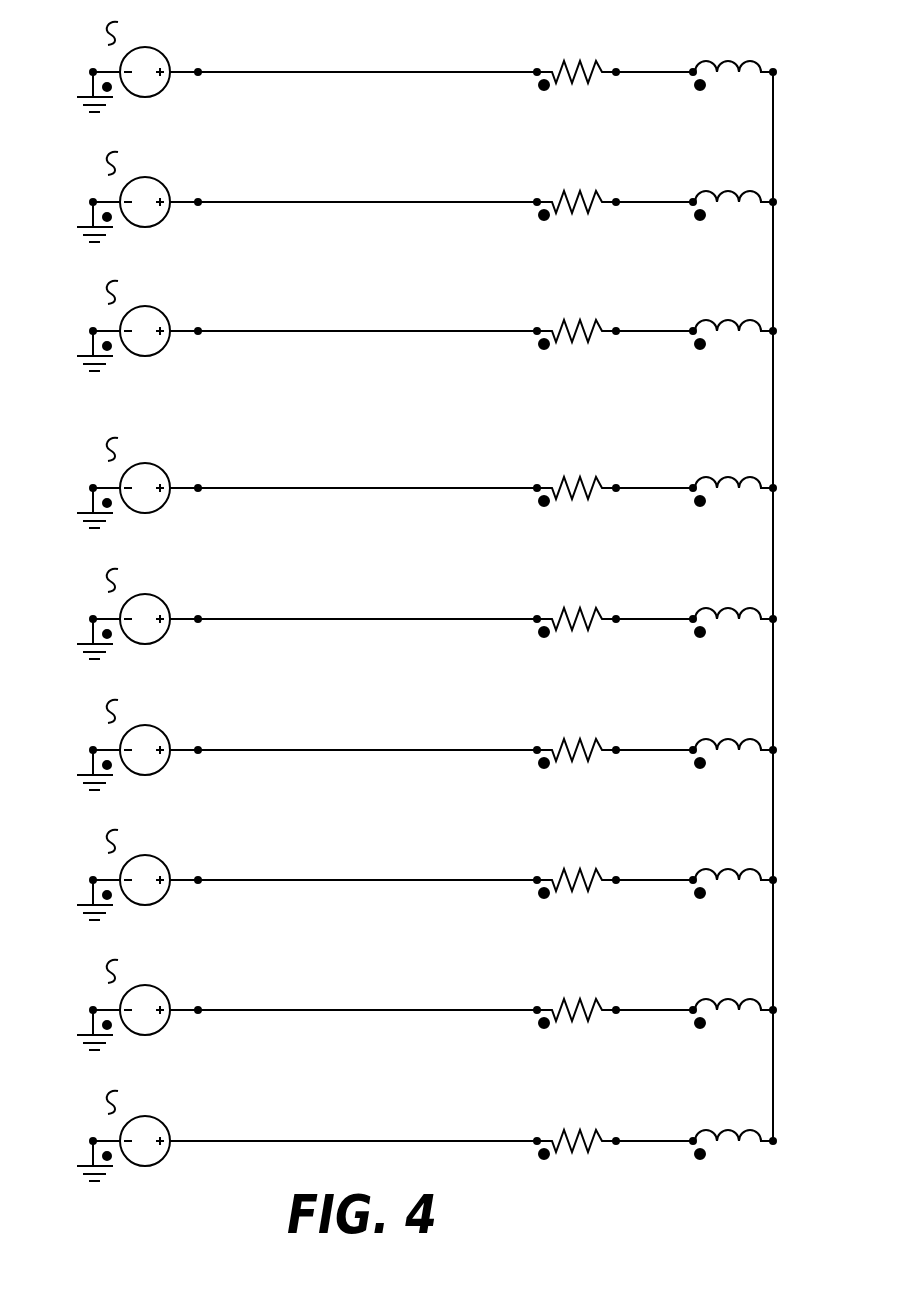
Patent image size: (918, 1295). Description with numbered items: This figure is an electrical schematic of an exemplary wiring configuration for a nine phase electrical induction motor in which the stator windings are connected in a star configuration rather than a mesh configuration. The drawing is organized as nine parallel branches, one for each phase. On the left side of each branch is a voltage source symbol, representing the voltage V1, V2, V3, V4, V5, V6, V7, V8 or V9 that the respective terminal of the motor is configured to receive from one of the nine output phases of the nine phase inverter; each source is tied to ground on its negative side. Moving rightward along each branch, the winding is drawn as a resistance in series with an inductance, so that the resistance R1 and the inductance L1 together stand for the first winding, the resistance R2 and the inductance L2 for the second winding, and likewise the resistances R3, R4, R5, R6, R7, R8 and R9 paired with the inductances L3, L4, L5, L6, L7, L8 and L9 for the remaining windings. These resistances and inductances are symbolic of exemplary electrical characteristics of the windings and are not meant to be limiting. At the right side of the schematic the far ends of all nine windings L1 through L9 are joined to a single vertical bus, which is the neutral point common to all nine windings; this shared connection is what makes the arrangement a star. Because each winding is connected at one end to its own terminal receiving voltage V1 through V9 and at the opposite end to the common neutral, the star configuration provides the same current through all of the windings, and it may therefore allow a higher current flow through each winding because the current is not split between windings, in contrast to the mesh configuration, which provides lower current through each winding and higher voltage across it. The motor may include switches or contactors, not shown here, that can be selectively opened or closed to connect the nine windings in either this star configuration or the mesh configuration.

The voltage V1 is at (307, 67).
The voltage V2 is at (307, 197).
The voltage V3 is at (307, 326).
The voltage V4 is at (307, 483).
The voltage V5 is at (307, 614).
The voltage V6 is at (307, 745).
The voltage V7 is at (307, 875).
The voltage V8 is at (307, 1005).
The voltage V9 is at (307, 1136).
The resistance R1 is at (576, 55).
The resistance R2 is at (576, 185).
The resistance R3 is at (576, 314).
The resistance R4 is at (576, 471).
The resistance R5 is at (576, 602).
The resistance R6 is at (576, 733).
The resistance R7 is at (576, 863).
The resistance R8 is at (576, 993).
The resistance R9 is at (576, 1124).
The winding L1 is at (696, 55).
The winding L2 is at (696, 185).
The winding L3 is at (696, 314).
The winding L4 is at (696, 471).
The winding L5 is at (696, 602).
The winding L6 is at (696, 733).
The winding L7 is at (696, 863).
The winding L8 is at (696, 993).
The winding L9 is at (696, 1124).